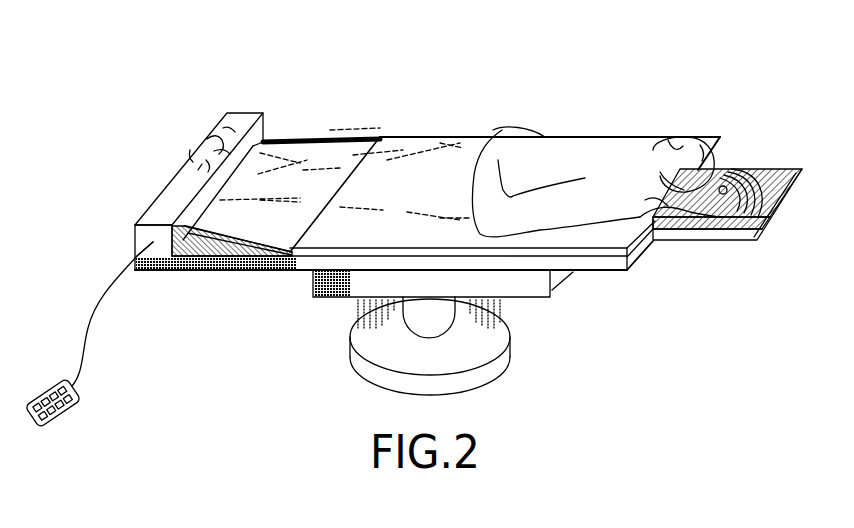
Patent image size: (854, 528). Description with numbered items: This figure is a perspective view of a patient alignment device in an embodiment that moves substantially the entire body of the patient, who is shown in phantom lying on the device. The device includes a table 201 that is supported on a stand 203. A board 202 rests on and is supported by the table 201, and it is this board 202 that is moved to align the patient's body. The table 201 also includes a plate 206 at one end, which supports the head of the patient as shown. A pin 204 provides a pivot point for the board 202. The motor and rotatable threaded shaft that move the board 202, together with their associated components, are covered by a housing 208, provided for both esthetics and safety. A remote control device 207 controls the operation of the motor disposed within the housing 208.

The table 201 is at (268, 260).
The board 202 is at (579, 240).
The stand 203 is at (438, 355).
The pin 204 is at (727, 187).
The plate 206 is at (720, 233).
The remote control device 207 is at (62, 415).
The housing 208 is at (237, 122).